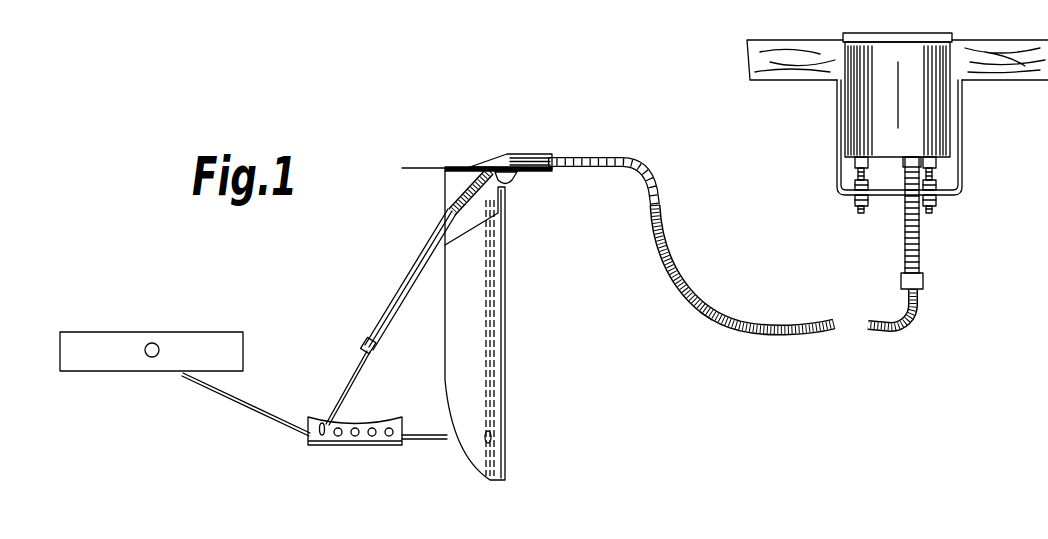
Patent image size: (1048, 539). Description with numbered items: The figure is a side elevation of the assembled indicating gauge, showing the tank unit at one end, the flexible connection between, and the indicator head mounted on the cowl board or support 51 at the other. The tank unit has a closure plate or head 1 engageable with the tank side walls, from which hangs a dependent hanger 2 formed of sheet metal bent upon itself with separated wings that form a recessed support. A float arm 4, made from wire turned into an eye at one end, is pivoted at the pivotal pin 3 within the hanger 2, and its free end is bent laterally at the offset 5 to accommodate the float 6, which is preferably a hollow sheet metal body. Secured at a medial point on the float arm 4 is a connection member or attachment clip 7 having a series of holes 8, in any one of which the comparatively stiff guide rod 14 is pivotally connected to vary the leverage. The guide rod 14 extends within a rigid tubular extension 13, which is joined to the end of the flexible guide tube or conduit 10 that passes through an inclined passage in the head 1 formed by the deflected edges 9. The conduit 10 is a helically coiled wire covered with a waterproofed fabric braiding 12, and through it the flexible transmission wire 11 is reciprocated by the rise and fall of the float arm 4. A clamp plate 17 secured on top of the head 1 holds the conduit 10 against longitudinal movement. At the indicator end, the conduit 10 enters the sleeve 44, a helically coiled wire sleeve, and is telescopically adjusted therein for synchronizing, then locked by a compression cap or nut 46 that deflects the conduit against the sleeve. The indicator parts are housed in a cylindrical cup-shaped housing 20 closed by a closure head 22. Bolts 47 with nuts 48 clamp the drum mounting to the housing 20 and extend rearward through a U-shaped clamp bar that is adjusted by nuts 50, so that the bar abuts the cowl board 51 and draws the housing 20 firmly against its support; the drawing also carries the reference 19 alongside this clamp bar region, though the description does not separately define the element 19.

The closure plate or head 1 is at (413, 166).
The dependent hanger 2 is at (500, 312).
The pivotal pin 3 is at (494, 438).
The float arm 4 is at (429, 446).
The laterally bent offset 5 is at (248, 407).
The float 6 is at (151, 351).
The connection member or attachment clip 7 is at (366, 423).
The holes 8 is at (334, 434).
The deflected edges of perforation 9 is at (497, 165).
The guide tube or conduit 10 is at (450, 198).
The transmission wire 11 is at (845, 321).
The fabric envelope or braiding 12 is at (703, 314).
The rigid tubular extension 13 is at (415, 268).
The guide rod 14 is at (361, 373).
The clamp plate or cap plate 17 is at (515, 158).
The supporting bracket 19 is at (833, 128).
The housing 20 is at (953, 101).
The closure head 22 is at (942, 38).
The sleeve 44 is at (920, 232).
The compression cap or nut 46 is at (901, 279).
The bolts 47 is at (838, 182).
The nuts 48 is at (852, 160).
The nuts 50 is at (855, 200).
The cowl board or support 51 is at (796, 46).